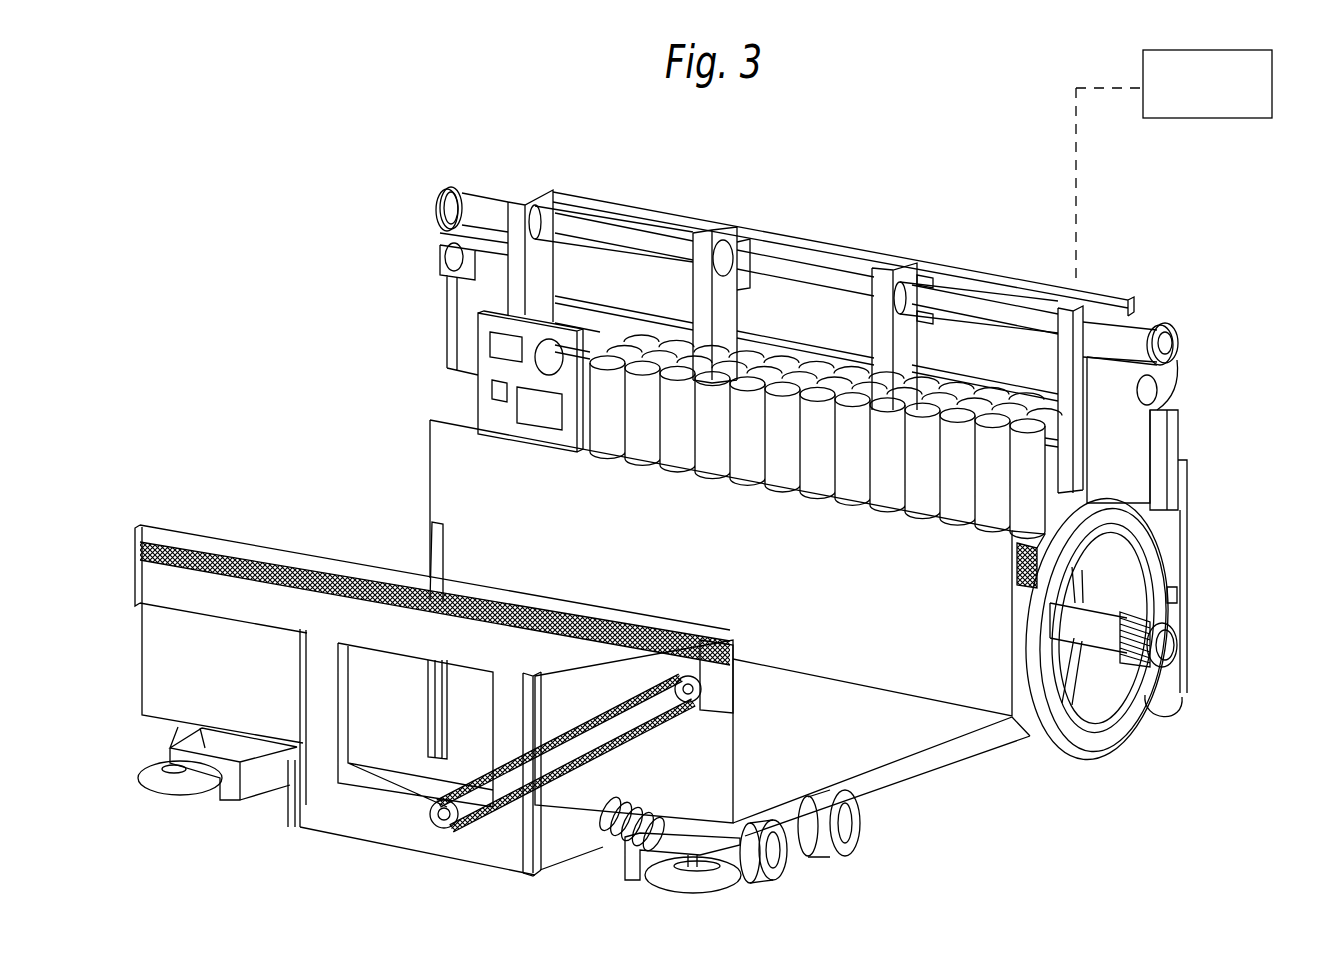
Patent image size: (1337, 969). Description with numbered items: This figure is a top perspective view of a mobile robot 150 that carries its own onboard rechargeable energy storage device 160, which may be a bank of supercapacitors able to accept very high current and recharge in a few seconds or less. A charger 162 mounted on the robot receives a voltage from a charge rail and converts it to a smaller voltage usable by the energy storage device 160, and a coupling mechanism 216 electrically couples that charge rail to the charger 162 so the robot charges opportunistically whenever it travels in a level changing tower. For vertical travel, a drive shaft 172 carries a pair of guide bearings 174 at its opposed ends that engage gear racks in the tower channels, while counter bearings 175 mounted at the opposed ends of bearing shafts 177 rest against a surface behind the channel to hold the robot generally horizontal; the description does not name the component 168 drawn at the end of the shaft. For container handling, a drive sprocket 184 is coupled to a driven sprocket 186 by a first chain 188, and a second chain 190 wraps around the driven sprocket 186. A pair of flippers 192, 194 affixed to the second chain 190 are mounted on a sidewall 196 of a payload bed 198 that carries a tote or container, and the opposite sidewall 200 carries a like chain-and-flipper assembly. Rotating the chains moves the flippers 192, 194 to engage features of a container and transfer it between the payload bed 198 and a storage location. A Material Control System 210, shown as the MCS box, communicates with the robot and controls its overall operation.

The mobile robot 150 is at (318, 172).
The rechargeable energy storage device 160 is at (824, 398).
The charger 162 is at (490, 370).
The wheel 168 is at (1075, 757).
The drive shaft 172 is at (1097, 632).
The guide bearings 174 is at (1163, 665).
The counter bearings 175 is at (446, 188).
The bearing shafts 177 is at (583, 222).
The drive sprocket 184 is at (442, 820).
The driven sprocket 186 is at (689, 682).
The first chain 188 is at (614, 749).
The second chain 190 is at (243, 568).
The flipper 192 is at (447, 553).
The flipper 194 is at (430, 732).
The sidewall 196 is at (240, 671).
The payload bed 198 is at (829, 741).
The opposite sidewall 200 is at (876, 602).
The Material Control System (MCS) 210 is at (1230, 50).
The coupling mechanism 216 is at (1180, 438).